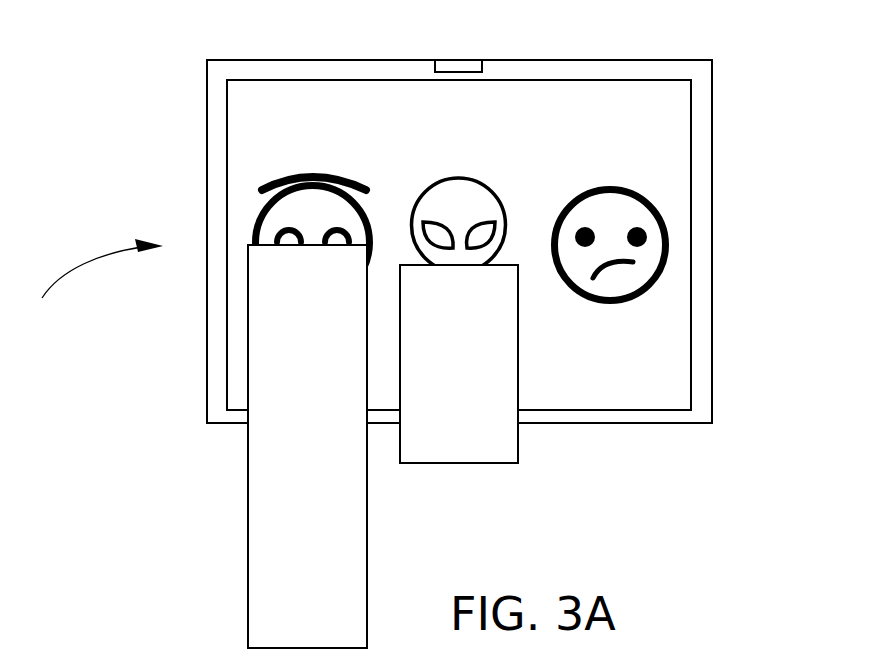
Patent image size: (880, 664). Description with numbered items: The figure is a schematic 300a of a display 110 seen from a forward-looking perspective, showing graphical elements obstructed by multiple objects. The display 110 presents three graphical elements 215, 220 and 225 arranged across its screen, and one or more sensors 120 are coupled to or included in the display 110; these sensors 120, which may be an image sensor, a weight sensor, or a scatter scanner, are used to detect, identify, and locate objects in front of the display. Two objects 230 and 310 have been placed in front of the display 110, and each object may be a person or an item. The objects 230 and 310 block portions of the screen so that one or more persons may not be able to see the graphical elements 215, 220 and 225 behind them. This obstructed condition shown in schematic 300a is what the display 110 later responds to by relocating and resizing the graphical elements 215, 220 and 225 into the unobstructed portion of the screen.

The display 110 is at (207, 105).
The sensors 120 is at (460, 61).
The graphical element 215 is at (260, 183).
The graphical element 220 is at (497, 190).
The graphical element 225 is at (647, 200).
The object 230 is at (248, 495).
The object 310 is at (518, 448).
The schematic 300a is at (73, 330).